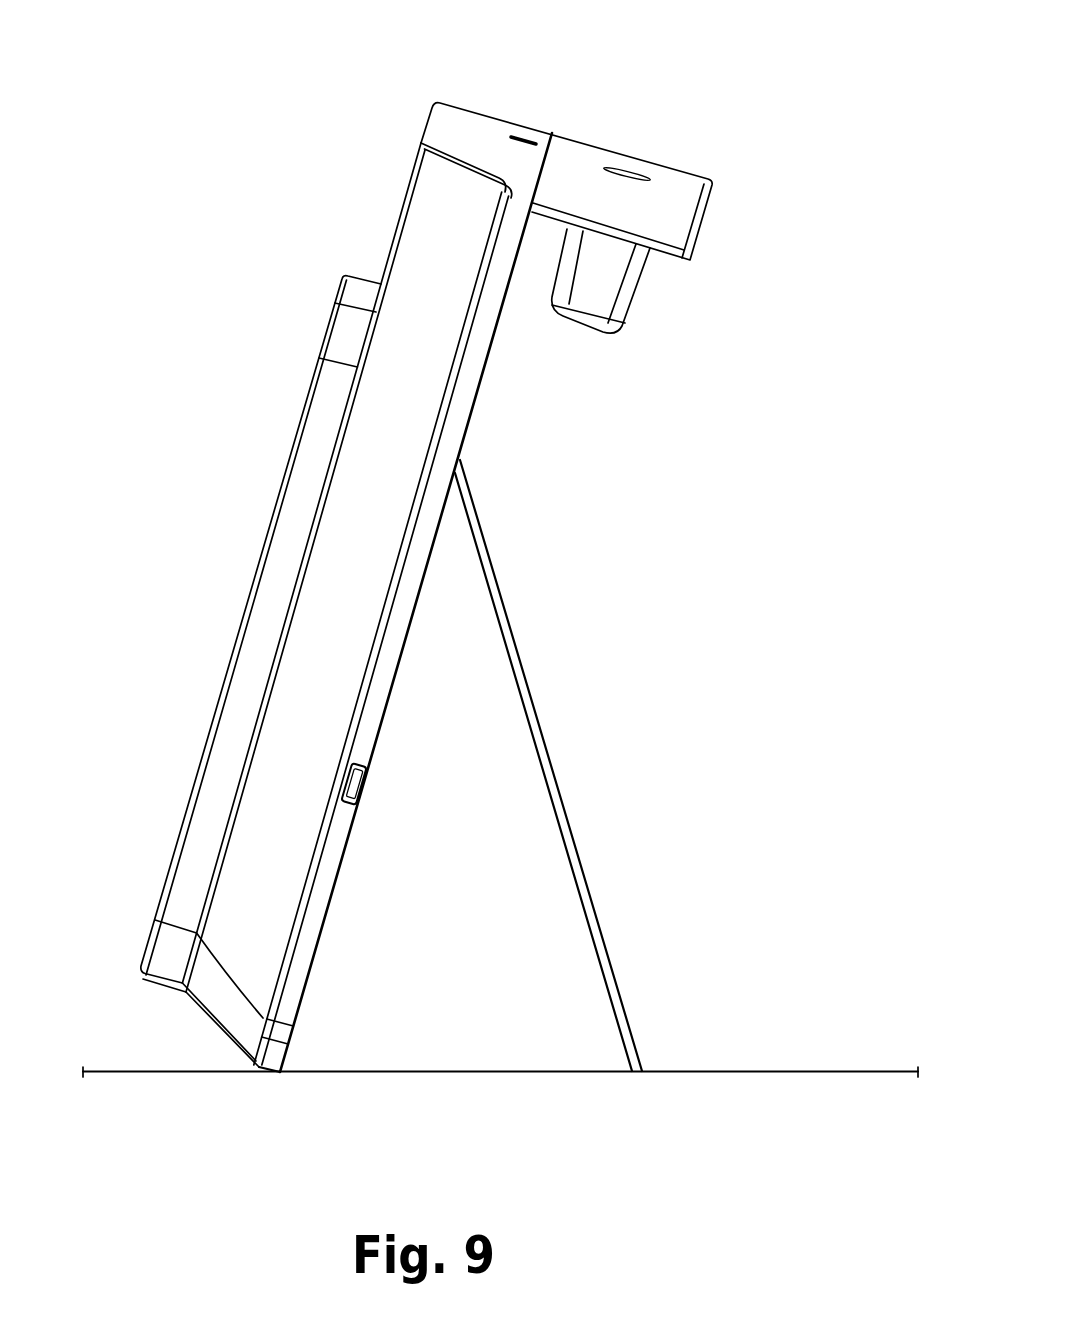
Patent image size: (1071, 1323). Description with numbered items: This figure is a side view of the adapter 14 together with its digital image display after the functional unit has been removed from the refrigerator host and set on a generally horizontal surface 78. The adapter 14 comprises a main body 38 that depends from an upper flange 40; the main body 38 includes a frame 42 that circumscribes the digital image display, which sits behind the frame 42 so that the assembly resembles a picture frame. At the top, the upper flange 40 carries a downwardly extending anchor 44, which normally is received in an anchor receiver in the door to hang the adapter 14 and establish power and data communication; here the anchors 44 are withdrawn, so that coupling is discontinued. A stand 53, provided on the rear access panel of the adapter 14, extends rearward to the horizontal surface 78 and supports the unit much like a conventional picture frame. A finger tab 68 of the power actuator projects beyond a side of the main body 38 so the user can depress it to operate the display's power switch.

The adapter 14 is at (806, 40).
The main body 38 is at (258, 963).
The upper flange 40 is at (592, 160).
The frame 42 is at (170, 942).
The anchors 44 is at (602, 290).
The stand 53 is at (552, 777).
The finger tab 68 is at (360, 795).
The generally horizontal surface 78 is at (770, 1071).